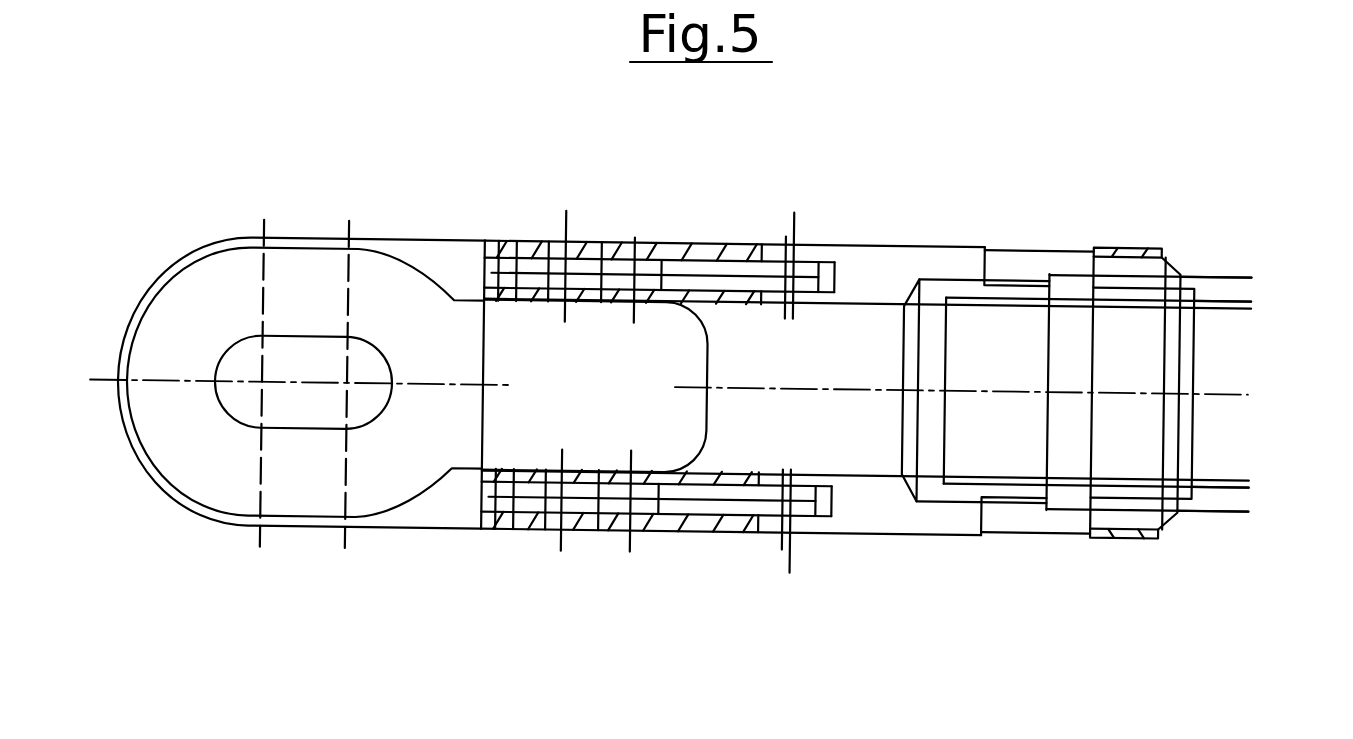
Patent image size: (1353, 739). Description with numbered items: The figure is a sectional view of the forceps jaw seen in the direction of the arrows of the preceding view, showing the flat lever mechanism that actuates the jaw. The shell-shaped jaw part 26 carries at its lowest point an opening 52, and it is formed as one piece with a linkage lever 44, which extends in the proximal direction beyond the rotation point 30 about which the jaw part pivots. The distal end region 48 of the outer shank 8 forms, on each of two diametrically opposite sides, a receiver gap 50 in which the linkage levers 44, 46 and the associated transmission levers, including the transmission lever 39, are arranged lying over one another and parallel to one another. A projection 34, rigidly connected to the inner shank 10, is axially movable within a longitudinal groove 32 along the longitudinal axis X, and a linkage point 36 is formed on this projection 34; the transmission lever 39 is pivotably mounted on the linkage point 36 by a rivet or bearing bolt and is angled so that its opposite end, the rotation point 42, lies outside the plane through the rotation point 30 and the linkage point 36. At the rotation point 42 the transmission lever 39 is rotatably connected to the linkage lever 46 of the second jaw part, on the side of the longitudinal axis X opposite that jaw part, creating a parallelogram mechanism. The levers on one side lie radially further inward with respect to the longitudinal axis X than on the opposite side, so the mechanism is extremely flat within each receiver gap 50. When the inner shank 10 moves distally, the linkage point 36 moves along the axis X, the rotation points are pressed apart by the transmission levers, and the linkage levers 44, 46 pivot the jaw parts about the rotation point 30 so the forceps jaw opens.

The outer shank 8 is at (1140, 527).
The inner shank 10 is at (1240, 484).
The jaw part 26 is at (205, 278).
The rotation point 30 is at (565, 207).
The longitudinal groove 32 is at (1015, 255).
The projection 34 is at (908, 256).
The linkage point 36 is at (793, 246).
The transmission lever 39 is at (730, 261).
The rotation point 42 is at (635, 234).
The linkage lever 44 is at (495, 237).
The linkage lever 46 is at (496, 278).
The distal end region 48 is at (607, 293).
The receiver gap 50 is at (547, 265).
The opening 52 is at (240, 410).
The longitudinal axis X is at (1222, 384).